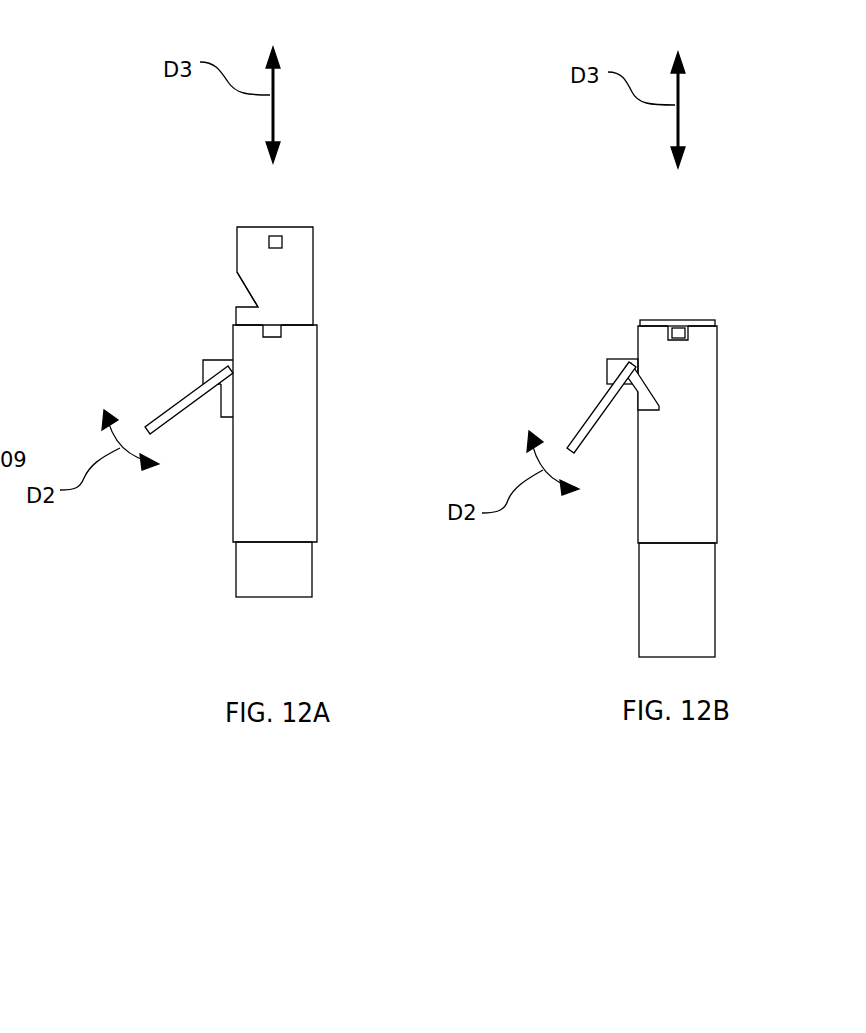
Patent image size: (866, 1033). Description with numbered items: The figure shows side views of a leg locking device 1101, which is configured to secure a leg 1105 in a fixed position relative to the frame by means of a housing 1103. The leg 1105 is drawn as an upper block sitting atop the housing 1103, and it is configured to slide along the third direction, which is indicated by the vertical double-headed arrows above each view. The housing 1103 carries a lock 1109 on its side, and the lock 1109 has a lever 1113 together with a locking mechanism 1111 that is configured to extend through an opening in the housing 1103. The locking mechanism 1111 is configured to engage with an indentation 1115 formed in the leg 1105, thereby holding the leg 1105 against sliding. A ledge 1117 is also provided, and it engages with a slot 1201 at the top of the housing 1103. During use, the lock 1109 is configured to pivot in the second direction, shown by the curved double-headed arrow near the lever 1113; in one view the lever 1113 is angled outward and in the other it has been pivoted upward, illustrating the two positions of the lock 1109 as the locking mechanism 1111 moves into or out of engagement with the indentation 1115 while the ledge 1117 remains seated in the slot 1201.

In FIG. 12A, the leg locking device 1101 is at (416, 181).
In FIG. 12B, the leg locking device 1101 is at (768, 231).
In FIG. 12A, the housing 1103 is at (317, 482).
In FIG. 12A, the leg 1105 is at (236, 231).
In FIG. 12A, the lock 1109 is at (177, 353).
In FIG. 12A, the locking mechanism 1111 is at (222, 410).
In FIG. 12B, the locking mechanism 1111 is at (627, 393).
In FIG. 12A, the lever 1113 is at (163, 410).
In FIG. 12A, the indentation 1115 is at (226, 290).
In FIG. 12B, the indentation 1115 is at (668, 394).
In FIG. 12A, the ledge 1117 is at (283, 242).
In FIG. 12B, the ledge 1117 is at (677, 326).
In FIG. 12A, the slot 1201 is at (283, 334).
In FIG. 12B, the slot 1201 is at (690, 332).